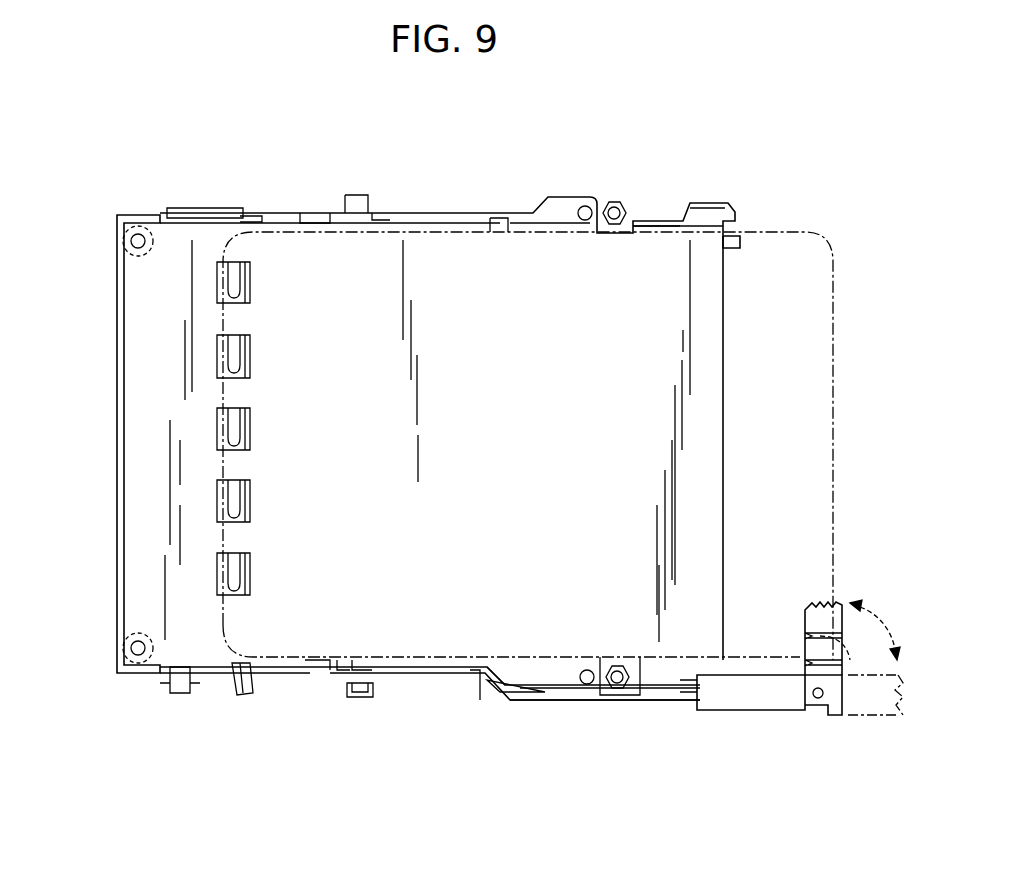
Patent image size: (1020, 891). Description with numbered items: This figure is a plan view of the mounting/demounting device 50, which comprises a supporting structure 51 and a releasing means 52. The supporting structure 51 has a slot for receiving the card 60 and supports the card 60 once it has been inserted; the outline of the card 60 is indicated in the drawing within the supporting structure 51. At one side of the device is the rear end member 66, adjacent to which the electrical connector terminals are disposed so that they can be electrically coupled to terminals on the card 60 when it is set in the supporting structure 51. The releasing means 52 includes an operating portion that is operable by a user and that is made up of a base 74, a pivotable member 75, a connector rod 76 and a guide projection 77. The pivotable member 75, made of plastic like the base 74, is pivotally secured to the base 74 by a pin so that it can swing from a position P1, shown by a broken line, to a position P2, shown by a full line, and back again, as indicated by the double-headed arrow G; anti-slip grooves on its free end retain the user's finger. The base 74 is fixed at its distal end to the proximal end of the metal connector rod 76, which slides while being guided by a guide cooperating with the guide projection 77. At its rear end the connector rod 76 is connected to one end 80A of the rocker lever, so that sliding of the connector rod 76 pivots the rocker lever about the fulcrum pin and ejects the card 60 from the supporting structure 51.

The mounting/demounting device 50 is at (515, 190).
The supporting structure 51 is at (496, 451).
The releasing means 52 is at (757, 725).
The card 60 is at (834, 458).
The rear end member 66 is at (117, 436).
The base 74 is at (720, 710).
The pivotable member 75 is at (826, 706).
The connector rod 76 is at (528, 703).
The guide projection 77 is at (357, 697).
The one end of the rocker lever 80A is at (246, 694).
The position P1 is at (821, 600).
The position P2 is at (880, 712).
The double-headed arrow G is at (871, 607).